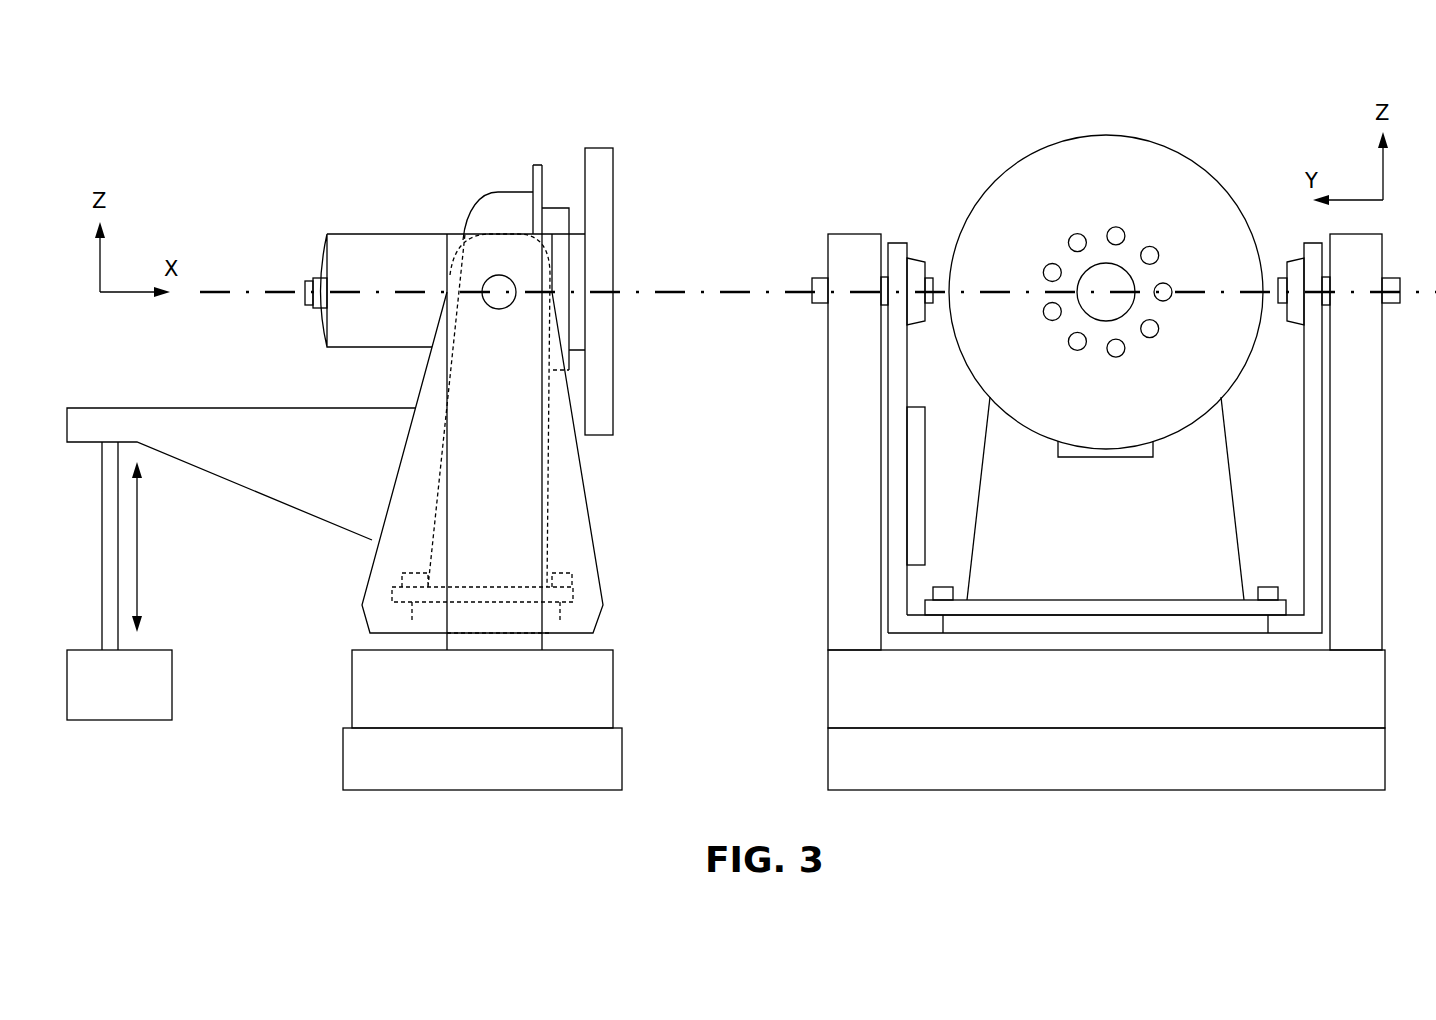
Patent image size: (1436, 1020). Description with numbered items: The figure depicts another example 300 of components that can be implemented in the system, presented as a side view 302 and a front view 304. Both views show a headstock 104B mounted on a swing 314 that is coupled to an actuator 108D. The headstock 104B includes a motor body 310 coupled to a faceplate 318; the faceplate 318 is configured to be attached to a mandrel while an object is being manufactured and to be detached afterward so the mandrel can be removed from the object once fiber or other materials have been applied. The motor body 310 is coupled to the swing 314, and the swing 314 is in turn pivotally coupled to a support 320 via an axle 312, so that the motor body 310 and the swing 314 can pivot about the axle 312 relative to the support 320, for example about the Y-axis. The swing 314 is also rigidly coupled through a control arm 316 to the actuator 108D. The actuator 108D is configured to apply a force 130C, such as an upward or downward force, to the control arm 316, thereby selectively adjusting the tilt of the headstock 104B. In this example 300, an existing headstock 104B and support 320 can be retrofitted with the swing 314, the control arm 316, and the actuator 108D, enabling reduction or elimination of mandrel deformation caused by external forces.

The example 300 is at (273, 97).
The side view 302 is at (622, 97).
The front view 304 is at (830, 132).
The headstock 104B is at (413, 132).
The motor body 310 is at (412, 233).
The axle 312 is at (499, 275).
The swing 314 is at (587, 493).
The control arm 316 is at (238, 408).
The faceplate 318 is at (585, 148).
The support 320 is at (613, 650).
The force 130C is at (137, 553).
The actuator 108D is at (172, 650).